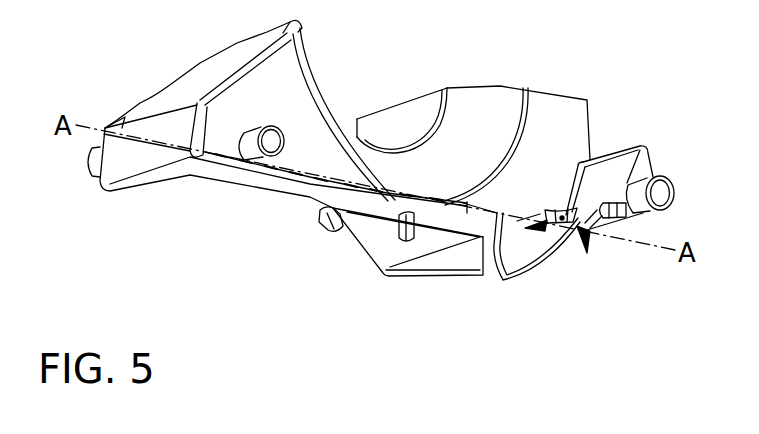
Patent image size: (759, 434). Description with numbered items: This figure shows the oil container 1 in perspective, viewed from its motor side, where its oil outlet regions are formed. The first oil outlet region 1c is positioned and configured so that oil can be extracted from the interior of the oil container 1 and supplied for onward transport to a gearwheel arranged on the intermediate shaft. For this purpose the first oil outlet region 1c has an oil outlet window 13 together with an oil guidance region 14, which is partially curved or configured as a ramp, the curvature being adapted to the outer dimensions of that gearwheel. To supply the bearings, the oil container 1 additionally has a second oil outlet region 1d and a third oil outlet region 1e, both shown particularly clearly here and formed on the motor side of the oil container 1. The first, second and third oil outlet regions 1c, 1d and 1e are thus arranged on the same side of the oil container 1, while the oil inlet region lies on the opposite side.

The oil container 1 is at (467, 118).
The first oil outlet region 1c is at (502, 281).
The second oil outlet region 1d is at (253, 148).
The third oil outlet region 1e is at (665, 183).
The oil outlet window 13 is at (562, 221).
The oil guidance region 14 is at (581, 232).